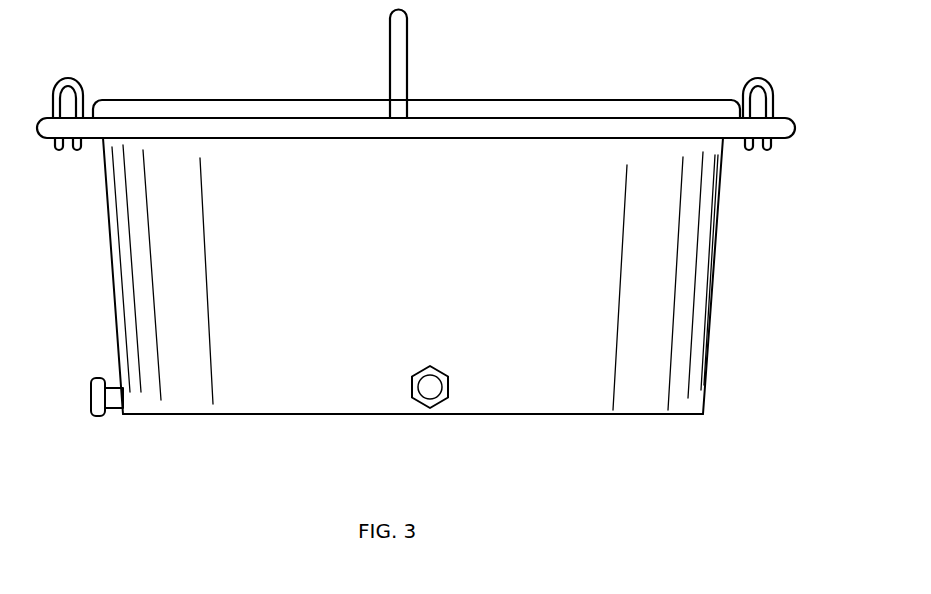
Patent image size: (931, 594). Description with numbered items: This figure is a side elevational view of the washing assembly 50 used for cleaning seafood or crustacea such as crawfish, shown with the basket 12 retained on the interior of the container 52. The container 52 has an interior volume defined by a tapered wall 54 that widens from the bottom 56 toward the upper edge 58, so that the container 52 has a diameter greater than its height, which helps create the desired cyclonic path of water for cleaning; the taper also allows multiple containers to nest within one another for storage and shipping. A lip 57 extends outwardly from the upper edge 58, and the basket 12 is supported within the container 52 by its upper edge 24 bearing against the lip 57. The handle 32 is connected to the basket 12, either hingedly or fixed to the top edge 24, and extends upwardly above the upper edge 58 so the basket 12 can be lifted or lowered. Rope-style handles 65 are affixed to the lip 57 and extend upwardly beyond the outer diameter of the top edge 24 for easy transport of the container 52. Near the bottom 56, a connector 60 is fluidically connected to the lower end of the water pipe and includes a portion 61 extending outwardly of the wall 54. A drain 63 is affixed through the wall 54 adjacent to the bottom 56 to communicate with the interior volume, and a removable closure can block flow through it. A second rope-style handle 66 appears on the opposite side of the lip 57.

The basket 12 is at (503, 108).
The upper edge of basket 24 is at (665, 100).
The handle 32 is at (401, 39).
The assembly 50 is at (434, 301).
The container 52 is at (681, 335).
The tapered wall 54 is at (110, 245).
The bottom 56 is at (592, 414).
The lip 57 is at (780, 125).
The upper edge of container 58 is at (594, 118).
The connector 60 is at (99, 410).
The portion of connector 61 is at (120, 392).
The drain 63 is at (449, 378).
The rope-style handles 65 is at (71, 78).
The clip 66 is at (758, 78).